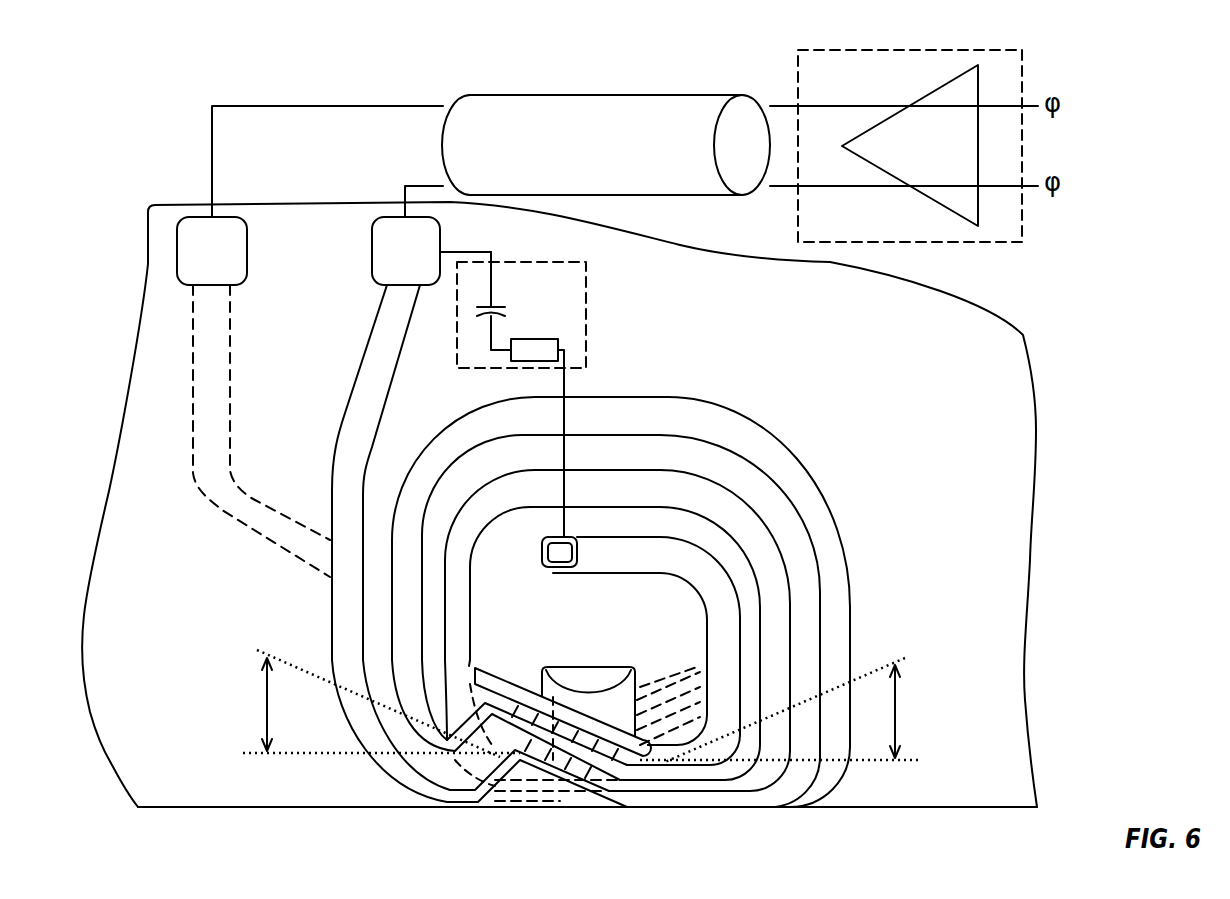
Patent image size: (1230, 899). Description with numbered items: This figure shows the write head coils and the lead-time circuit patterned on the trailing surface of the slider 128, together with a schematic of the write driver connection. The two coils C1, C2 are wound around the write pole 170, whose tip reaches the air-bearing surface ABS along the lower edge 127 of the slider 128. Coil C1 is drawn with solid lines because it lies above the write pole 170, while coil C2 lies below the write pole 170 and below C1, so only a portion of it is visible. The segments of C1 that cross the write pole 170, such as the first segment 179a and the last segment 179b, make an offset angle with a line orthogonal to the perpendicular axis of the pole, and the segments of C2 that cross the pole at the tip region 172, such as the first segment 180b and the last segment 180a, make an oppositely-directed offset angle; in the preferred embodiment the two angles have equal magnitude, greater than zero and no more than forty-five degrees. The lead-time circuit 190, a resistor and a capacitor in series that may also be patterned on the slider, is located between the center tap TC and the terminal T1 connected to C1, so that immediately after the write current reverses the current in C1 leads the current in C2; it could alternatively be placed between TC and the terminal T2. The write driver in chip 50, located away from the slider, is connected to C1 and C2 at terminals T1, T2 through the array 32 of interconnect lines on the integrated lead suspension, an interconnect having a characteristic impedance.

The array of interconnect lines 32 is at (534, 95).
The chip 50 is at (833, 49).
The slider body lower edge 127 is at (243, 809).
The slider 128 is at (1023, 497).
The write pole 170 is at (543, 665).
The pole tip region 172 is at (604, 801).
The first segment of C1 179a is at (690, 799).
The last segment of C1 179b is at (643, 757).
The last segment of C2 180a is at (497, 804).
The first segment of C2 180b is at (652, 690).
The lead-time circuit 190 is at (587, 335).
The terminal T1 is at (372, 252).
The terminal T2 is at (247, 250).
The coil C1 is at (787, 449).
The coil C2 is at (790, 537).
The center tap terminal TC is at (550, 568).
The air-bearing surface ABS is at (824, 809).